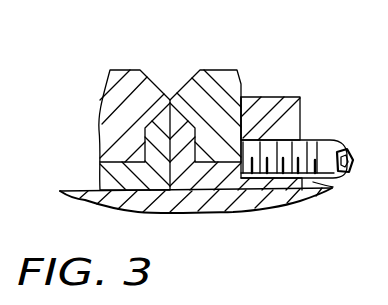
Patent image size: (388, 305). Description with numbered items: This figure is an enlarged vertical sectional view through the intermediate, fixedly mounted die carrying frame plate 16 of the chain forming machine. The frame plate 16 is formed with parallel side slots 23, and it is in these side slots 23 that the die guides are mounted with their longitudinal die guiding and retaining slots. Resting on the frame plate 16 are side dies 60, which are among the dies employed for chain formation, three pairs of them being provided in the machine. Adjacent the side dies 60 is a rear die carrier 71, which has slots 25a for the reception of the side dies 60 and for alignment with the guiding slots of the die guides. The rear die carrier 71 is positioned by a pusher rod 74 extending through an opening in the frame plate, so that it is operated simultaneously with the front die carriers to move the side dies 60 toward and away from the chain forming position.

The intermediate fixedly mounted die carrying frame plate 16 is at (235, 212).
The side die 60 is at (122, 78).
The slot 25a is at (113, 125).
The rear die carrier 71 is at (300, 110).
The threaded pin 74 is at (324, 140).
The side slot 23 is at (316, 182).